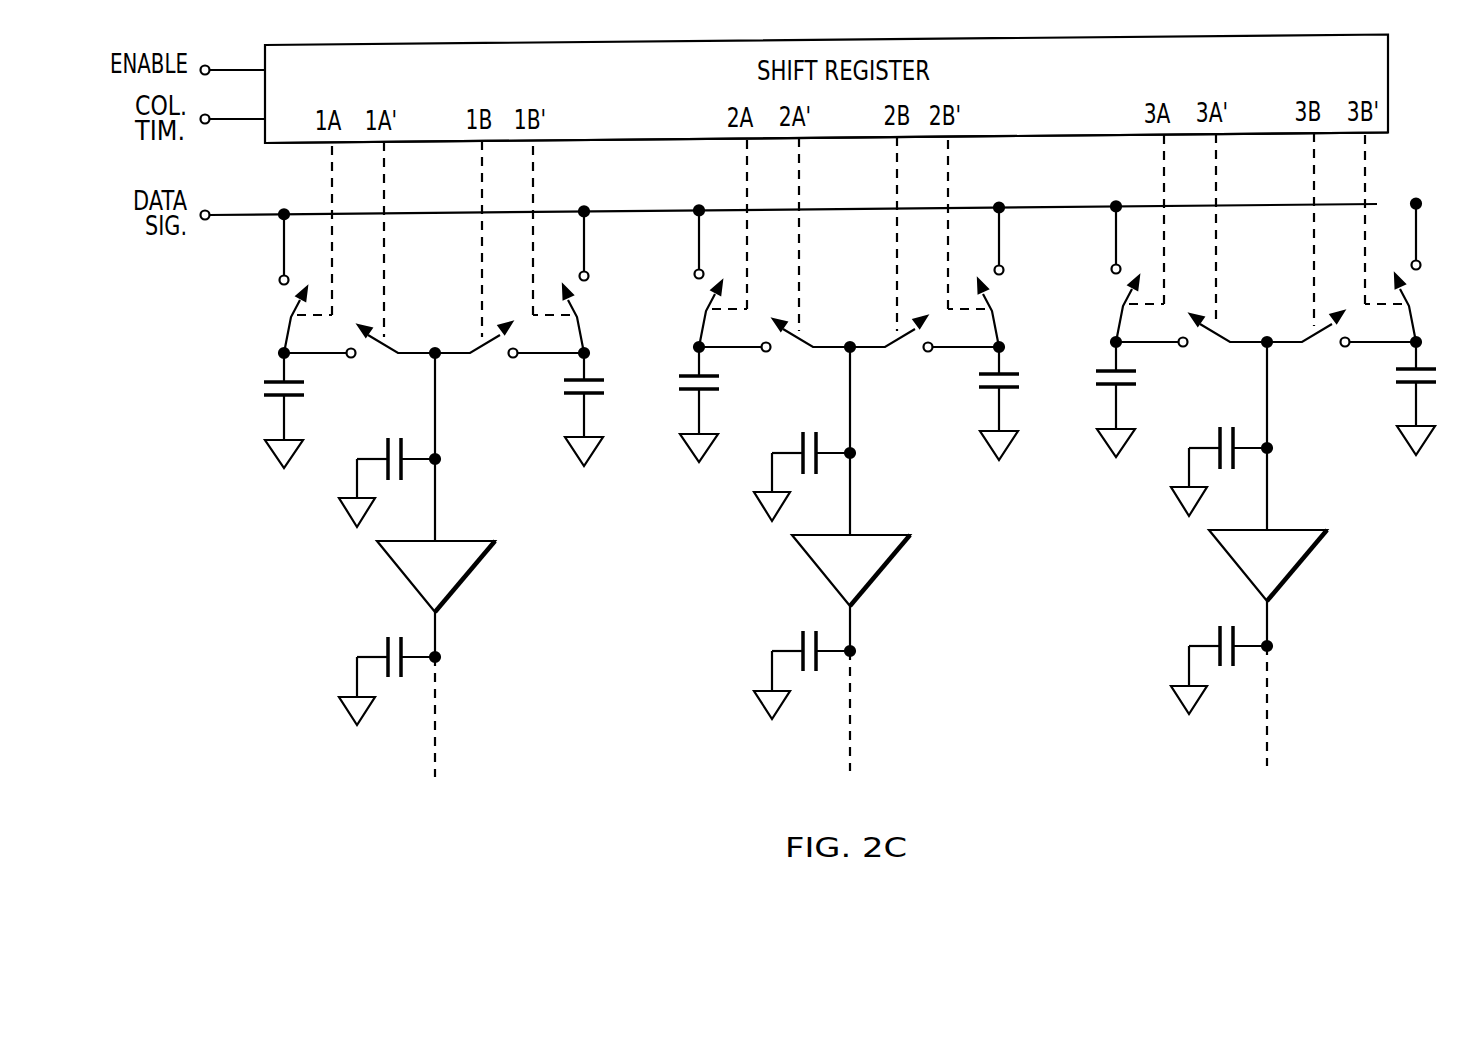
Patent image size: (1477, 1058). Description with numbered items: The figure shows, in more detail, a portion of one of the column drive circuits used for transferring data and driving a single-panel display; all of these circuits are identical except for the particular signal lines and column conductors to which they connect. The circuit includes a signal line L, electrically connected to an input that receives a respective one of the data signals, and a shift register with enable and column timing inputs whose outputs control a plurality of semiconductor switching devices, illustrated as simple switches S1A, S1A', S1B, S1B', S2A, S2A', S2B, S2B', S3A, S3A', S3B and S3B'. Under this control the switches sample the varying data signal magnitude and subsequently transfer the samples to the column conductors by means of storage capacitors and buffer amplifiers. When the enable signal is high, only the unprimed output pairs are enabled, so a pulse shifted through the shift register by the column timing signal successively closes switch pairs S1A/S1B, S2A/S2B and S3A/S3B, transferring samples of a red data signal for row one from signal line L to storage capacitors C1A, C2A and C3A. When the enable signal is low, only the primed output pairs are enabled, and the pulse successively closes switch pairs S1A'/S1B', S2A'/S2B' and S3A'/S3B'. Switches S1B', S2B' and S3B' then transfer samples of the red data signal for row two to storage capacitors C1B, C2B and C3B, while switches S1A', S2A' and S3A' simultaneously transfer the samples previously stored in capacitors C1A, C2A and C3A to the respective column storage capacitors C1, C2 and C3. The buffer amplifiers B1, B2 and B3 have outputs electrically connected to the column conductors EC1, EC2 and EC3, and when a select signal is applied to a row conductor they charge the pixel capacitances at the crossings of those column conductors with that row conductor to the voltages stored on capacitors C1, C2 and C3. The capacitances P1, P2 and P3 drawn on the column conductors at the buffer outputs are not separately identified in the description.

The signal line L is at (257, 212).
The switch S1A is at (284, 247).
The switch S1A' is at (359, 269).
The switch S1B is at (509, 268).
The switch S1B' is at (580, 247).
The storage capacitor C1A is at (298, 410).
The storage capacitor C1B is at (565, 409).
The column storage capacitor C1 is at (389, 482).
The buffer amplifier B1 is at (436, 482).
The column conductor EC1 is at (435, 626).
The parasitic capacitance P1 is at (389, 707).
The switch S2A is at (699, 243).
The switch S2A' is at (774, 264).
The switch S2B is at (924, 263).
The switch S2B' is at (995, 242).
The storage capacitor C2A is at (713, 404).
The storage capacitor C2B is at (980, 403).
The column storage capacitor C2 is at (804, 476).
The buffer amplifier B2 is at (851, 476).
The column conductor EC2 is at (850, 620).
The parasitic capacitance P2 is at (804, 701).
The switch S3A is at (1116, 239).
The switch S3A' is at (1191, 259).
The switch S3B is at (1341, 259).
The switch S3B' is at (1412, 237).
The storage capacitor C3A is at (1130, 399).
The storage capacitor C3B is at (1397, 398).
The column storage capacitor C3 is at (1221, 471).
The buffer amplifier B3 is at (1268, 471).
The column conductor EC3 is at (1267, 615).
The parasitic capacitance P3 is at (1221, 696).